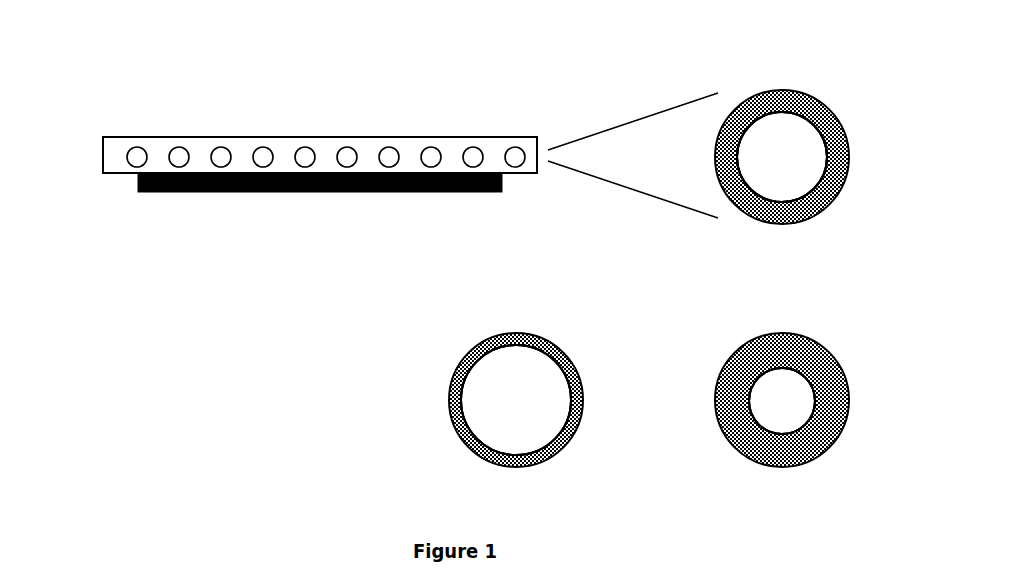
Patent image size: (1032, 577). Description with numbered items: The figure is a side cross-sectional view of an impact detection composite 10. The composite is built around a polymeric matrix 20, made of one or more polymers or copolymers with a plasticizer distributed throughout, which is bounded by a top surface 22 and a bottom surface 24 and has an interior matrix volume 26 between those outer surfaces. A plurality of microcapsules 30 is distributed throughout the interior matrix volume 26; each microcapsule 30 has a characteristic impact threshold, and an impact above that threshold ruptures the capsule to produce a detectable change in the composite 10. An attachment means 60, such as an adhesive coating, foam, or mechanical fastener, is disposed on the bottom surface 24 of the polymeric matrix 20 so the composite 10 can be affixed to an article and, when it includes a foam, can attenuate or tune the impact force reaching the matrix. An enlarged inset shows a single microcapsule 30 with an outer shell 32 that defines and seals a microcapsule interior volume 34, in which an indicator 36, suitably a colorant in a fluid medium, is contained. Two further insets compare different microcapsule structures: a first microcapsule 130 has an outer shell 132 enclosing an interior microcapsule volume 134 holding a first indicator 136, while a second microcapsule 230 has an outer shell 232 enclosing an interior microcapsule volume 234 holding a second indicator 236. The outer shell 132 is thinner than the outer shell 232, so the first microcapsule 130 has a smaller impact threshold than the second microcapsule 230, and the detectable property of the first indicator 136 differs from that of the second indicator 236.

The impact detection composite 10 is at (121, 84).
The polymeric matrix 20 is at (115, 163).
The top surface 22 is at (152, 135).
The bottom surface 24 is at (130, 175).
The interior matrix volume 26 is at (245, 150).
The microcapsule 30 is at (390, 153).
The outer shell 32 is at (838, 157).
The microcapsule interior volume 34 is at (770, 166).
The indicator 36 is at (793, 177).
The attachment means 60 is at (502, 185).
The first microcapsule 130 is at (580, 344).
The outer shell 132 is at (583, 403).
The interior microcapsule volume 134 is at (498, 409).
The first indicator 136 is at (527, 422).
The second microcapsule 230 is at (849, 344).
The outer shell 232 is at (837, 400).
The interior microcapsule volume 234 is at (765, 409).
The second indicator 236 is at (793, 423).